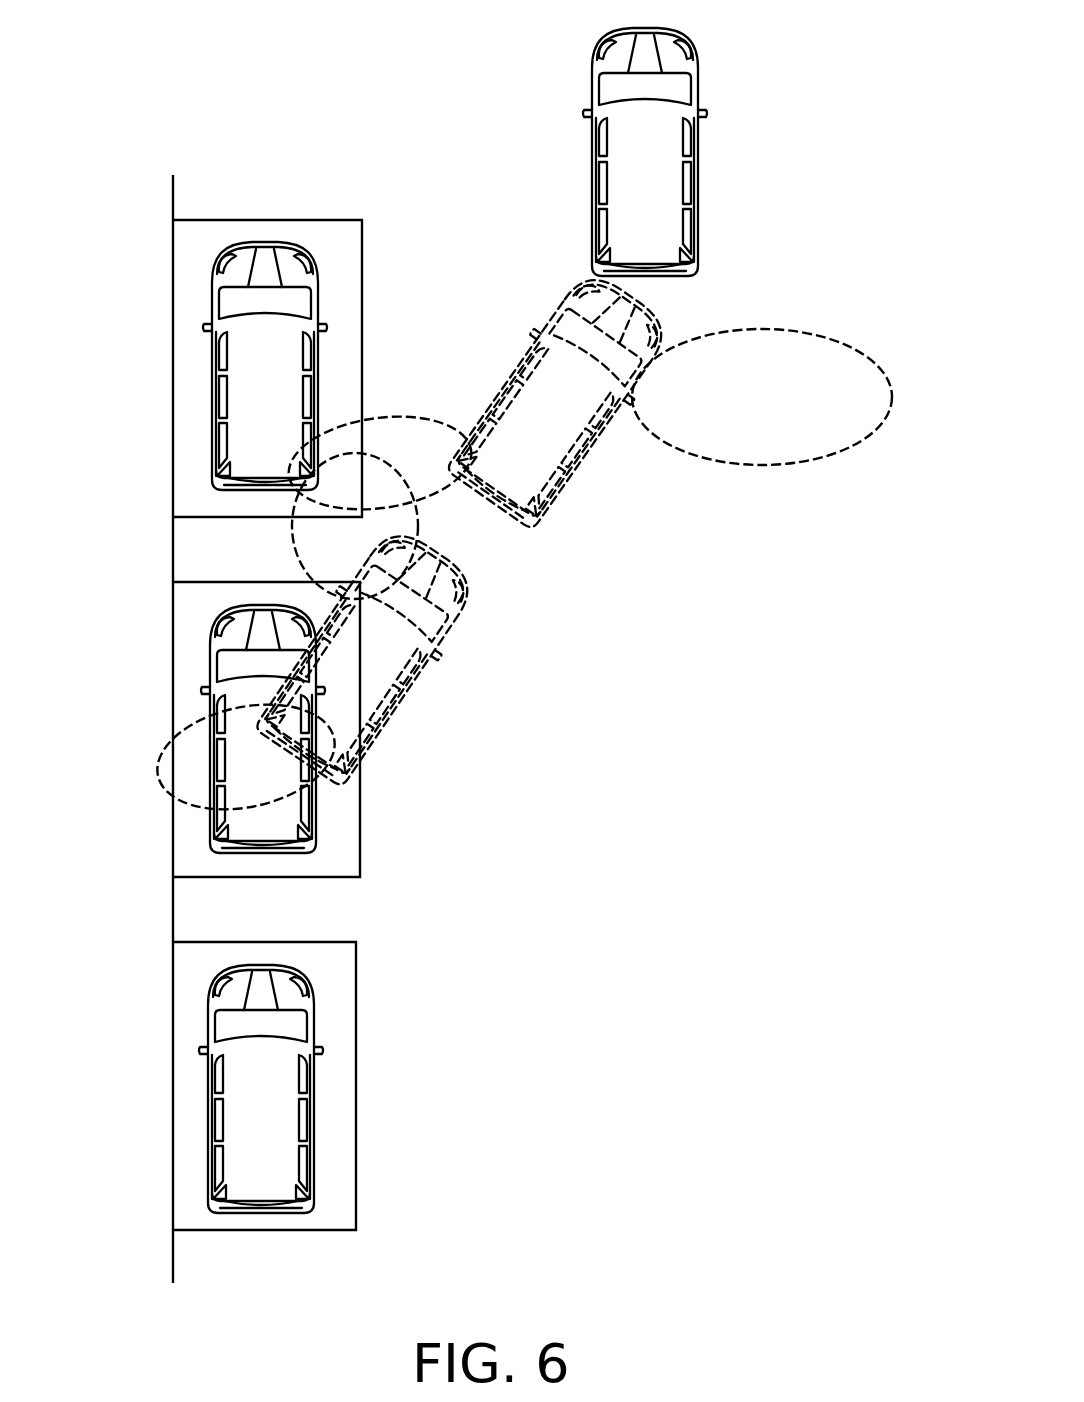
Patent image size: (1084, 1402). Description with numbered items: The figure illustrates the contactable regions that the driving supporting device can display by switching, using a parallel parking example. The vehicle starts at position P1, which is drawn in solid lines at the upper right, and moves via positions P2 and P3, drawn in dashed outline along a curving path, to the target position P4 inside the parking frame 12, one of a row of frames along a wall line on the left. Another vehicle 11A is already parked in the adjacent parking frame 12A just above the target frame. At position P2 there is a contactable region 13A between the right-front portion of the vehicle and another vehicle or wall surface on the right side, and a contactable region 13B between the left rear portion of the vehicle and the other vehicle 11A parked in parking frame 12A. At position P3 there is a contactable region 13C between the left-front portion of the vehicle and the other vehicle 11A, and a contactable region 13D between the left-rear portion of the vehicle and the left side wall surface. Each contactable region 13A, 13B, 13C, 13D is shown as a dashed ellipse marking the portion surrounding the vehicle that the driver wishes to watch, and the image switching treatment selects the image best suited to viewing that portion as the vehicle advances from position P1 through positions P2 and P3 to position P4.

The other vehicle 11A is at (212, 300).
The parking frame 12 is at (362, 830).
The parking frame 12A is at (343, 220).
The contactable region 13A is at (847, 343).
The contactable region 13B is at (405, 418).
The contactable region 13C is at (308, 558).
The contactable region 13D is at (162, 793).
The position P1 is at (700, 172).
The position P2 is at (593, 443).
The position P3 is at (418, 688).
The position P4 is at (210, 657).